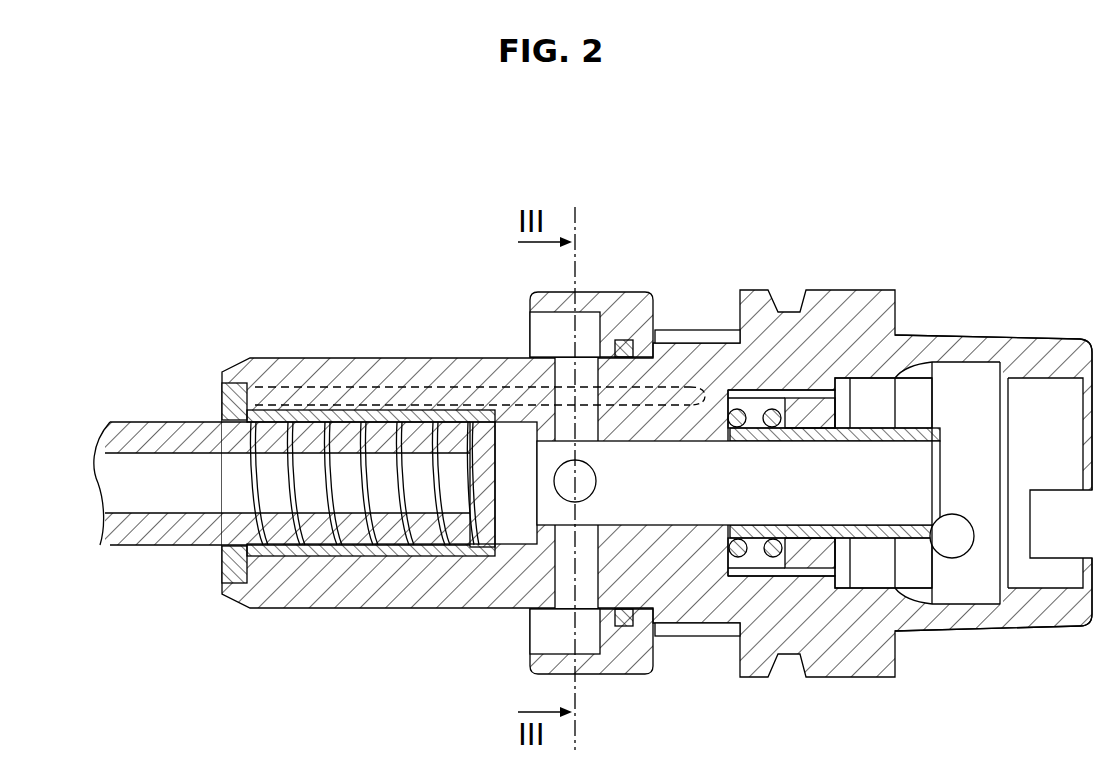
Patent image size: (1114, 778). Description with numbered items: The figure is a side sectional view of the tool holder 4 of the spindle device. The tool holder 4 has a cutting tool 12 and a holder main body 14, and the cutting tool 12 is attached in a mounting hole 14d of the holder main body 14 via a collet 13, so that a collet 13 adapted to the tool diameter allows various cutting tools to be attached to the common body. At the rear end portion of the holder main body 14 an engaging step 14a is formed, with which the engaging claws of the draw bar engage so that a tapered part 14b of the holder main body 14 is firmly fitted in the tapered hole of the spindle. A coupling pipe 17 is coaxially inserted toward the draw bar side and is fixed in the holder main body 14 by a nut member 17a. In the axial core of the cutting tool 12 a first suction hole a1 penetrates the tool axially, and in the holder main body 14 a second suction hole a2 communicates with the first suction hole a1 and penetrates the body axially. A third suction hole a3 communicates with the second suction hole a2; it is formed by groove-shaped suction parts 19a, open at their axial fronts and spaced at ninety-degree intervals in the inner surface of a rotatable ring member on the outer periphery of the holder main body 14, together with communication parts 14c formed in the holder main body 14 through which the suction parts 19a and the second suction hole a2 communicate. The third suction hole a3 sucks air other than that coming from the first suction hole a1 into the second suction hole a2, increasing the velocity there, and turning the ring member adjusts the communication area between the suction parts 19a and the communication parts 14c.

The tool holder 4 is at (252, 248).
The cutting tool 12 is at (157, 420).
The holder main body 14 is at (272, 356).
The collet 13 is at (345, 408).
The third suction hole a3 is at (415, 232).
The suction parts 19a is at (550, 325).
The communication parts 14c is at (560, 398).
The mounting hole 14d is at (360, 560).
The coupling pipe 17 is at (877, 428).
The nut member 17a is at (795, 403).
The engaging step 14a is at (990, 378).
The tapered part 14b is at (1030, 343).
The first suction hole a1 is at (165, 493).
The second suction hole a2 is at (652, 505).